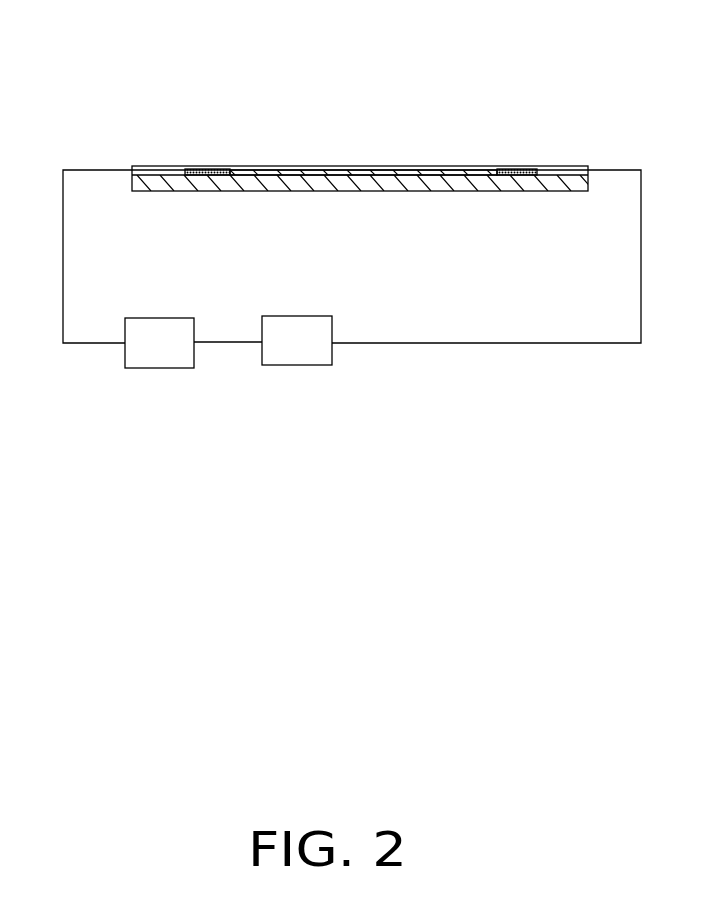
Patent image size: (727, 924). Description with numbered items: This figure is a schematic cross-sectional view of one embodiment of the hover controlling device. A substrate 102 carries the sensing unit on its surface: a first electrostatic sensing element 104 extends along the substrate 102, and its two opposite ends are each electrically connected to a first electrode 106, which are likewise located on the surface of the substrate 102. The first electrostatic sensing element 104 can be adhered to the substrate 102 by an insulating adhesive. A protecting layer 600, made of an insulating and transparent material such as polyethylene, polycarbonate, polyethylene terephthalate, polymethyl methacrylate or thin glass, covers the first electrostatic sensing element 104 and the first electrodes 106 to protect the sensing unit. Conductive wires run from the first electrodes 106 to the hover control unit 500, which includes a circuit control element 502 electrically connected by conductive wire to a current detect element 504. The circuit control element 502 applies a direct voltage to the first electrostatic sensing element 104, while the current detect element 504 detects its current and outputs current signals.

The protecting layer 600 is at (158, 165).
The substrate 102 is at (237, 192).
The first electrostatic sensing element 104 is at (397, 168).
The first electrode 106 is at (515, 170).
The hover control unit 500 is at (272, 404).
The circuit control element 502 is at (167, 368).
The current detect element 504 is at (300, 366).